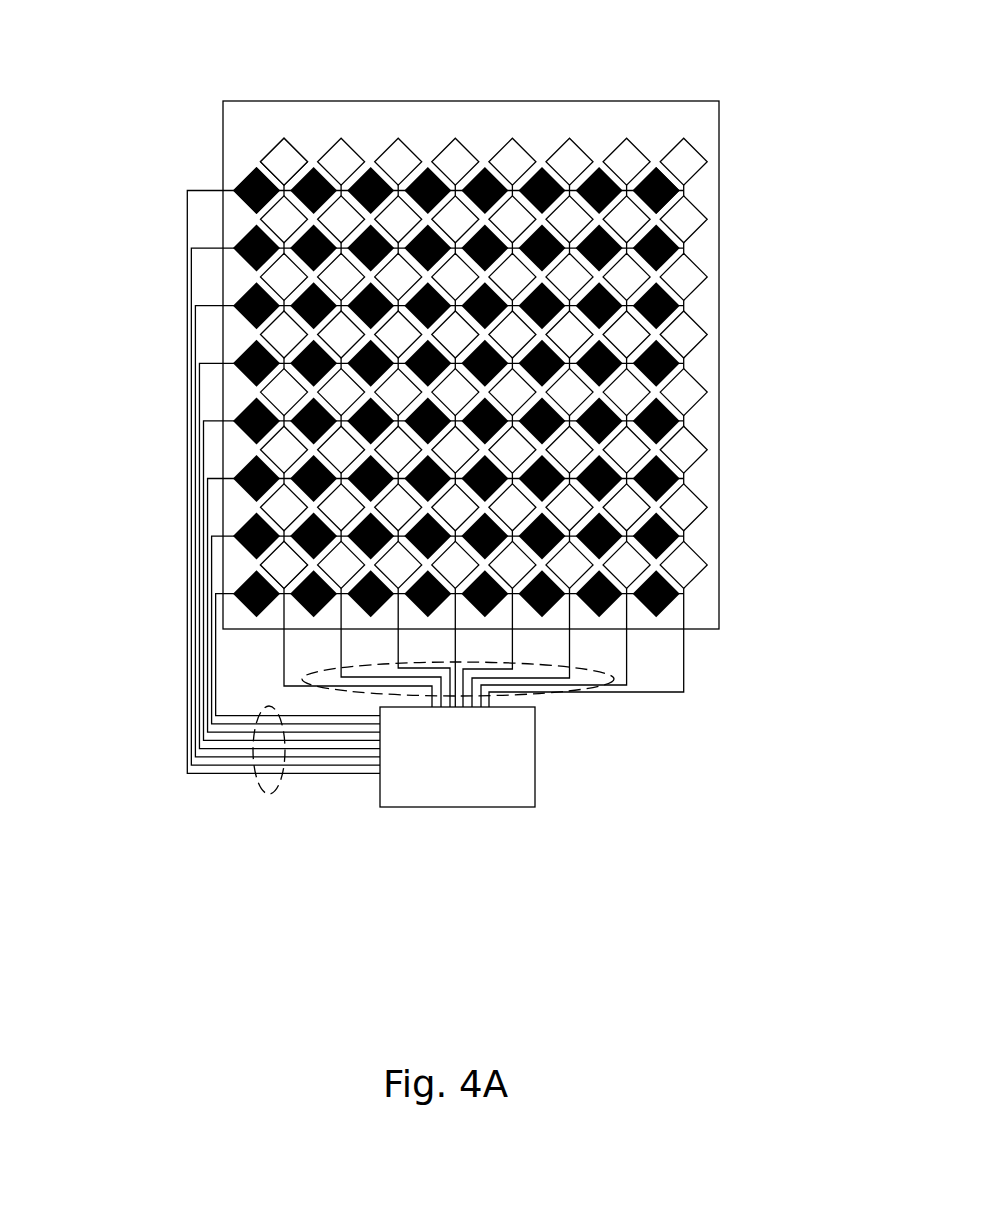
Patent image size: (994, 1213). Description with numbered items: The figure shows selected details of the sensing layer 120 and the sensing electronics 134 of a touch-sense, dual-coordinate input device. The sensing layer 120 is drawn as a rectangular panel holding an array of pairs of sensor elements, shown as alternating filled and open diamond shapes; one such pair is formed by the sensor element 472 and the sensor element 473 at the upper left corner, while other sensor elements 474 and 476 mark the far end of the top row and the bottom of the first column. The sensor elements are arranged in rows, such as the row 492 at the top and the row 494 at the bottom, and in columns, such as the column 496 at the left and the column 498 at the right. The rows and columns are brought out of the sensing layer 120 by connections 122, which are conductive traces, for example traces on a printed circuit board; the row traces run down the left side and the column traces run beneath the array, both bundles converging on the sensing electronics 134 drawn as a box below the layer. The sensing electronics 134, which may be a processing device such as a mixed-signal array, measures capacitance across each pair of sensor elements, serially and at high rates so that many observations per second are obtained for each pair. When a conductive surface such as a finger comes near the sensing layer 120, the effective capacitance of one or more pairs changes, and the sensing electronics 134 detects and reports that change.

The sensing layer 120 is at (574, 124).
The connection 122 is at (603, 724).
The sensing electronics 134 is at (473, 786).
The sensor element 472 is at (253, 177).
The sensor element 473 is at (284, 138).
The sensor element 474 is at (655, 167).
The sensor element 476 is at (283, 594).
The row 492 is at (226, 182).
The row 494 is at (175, 592).
The column 496 is at (240, 618).
The column 498 is at (695, 602).